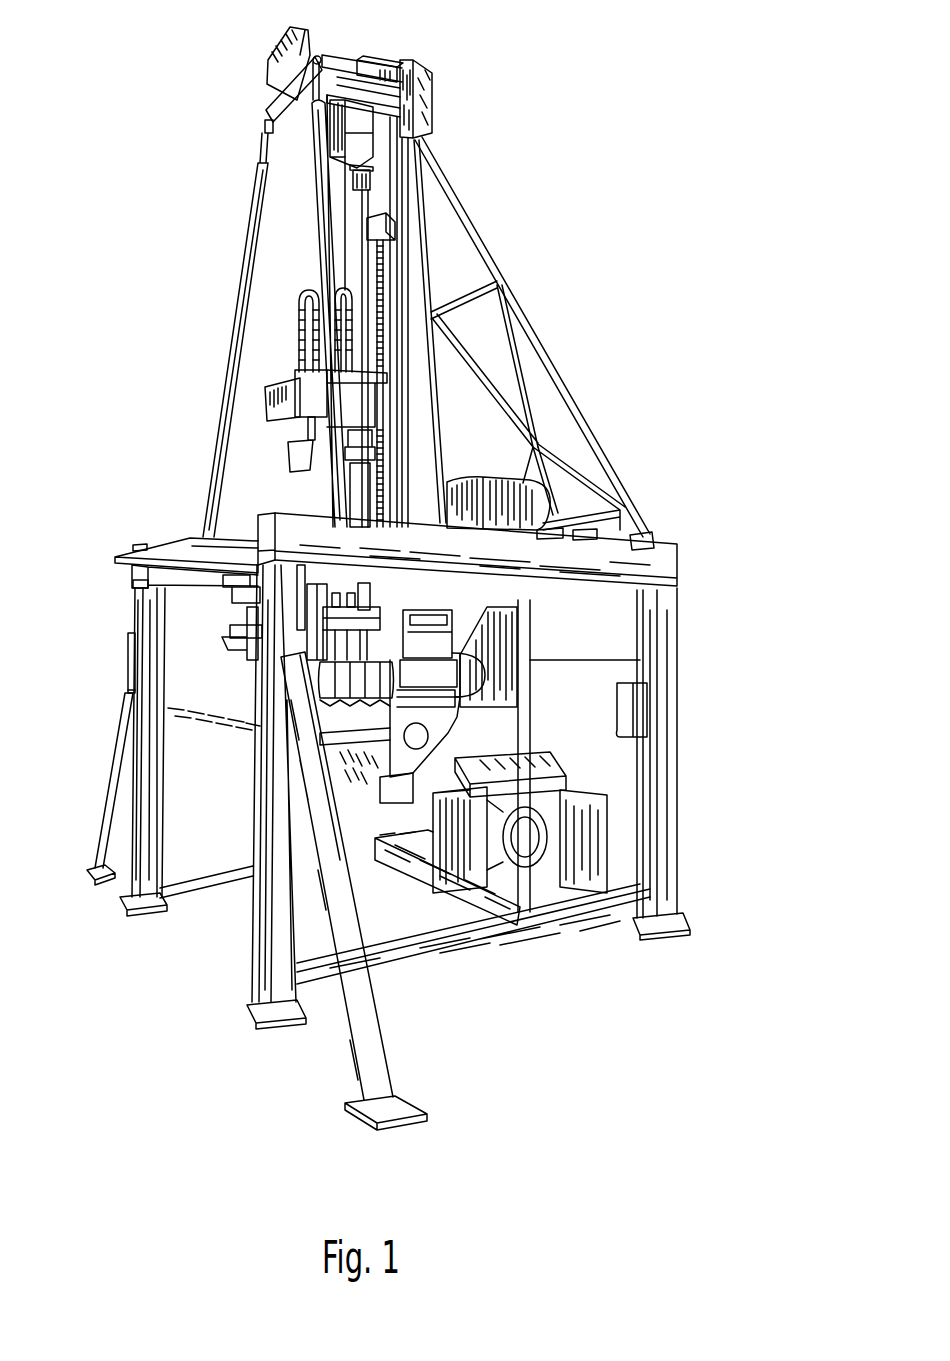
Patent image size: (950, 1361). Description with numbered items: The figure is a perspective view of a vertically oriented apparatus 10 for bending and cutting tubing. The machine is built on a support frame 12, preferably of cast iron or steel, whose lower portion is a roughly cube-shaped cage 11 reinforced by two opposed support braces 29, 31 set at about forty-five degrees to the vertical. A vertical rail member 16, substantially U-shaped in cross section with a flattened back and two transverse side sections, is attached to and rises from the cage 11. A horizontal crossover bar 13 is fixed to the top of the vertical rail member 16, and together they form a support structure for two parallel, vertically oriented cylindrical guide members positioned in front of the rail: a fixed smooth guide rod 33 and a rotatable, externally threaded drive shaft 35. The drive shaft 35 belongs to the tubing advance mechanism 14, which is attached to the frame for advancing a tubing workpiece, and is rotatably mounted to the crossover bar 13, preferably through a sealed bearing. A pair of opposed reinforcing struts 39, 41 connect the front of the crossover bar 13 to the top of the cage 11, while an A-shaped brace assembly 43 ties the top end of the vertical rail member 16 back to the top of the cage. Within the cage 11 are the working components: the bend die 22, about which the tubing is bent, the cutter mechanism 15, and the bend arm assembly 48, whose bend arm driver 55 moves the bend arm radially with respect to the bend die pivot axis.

The vertically oriented apparatus for bending and cutting tubing 10 is at (402, 574).
The cage 11 is at (108, 709).
The support frame 12 is at (690, 610).
The horizontal crossover bar 13 is at (342, 78).
The tubing advance mechanism 14 is at (285, 345).
The cutter mechanism 15 is at (235, 618).
The vertical rail member 16 is at (412, 284).
The bend die 22 is at (352, 695).
The support brace 29 is at (105, 820).
The support brace 31 is at (392, 1050).
The guide rod 33 is at (355, 220).
The drive shaft 35 is at (387, 267).
The reinforcing strut 39 is at (218, 438).
The reinforcing strut 41 is at (335, 488).
The A-shaped brace assembly 43 is at (568, 355).
The bend arm assembly 48 is at (368, 830).
The bend arm driver 55 is at (560, 755).